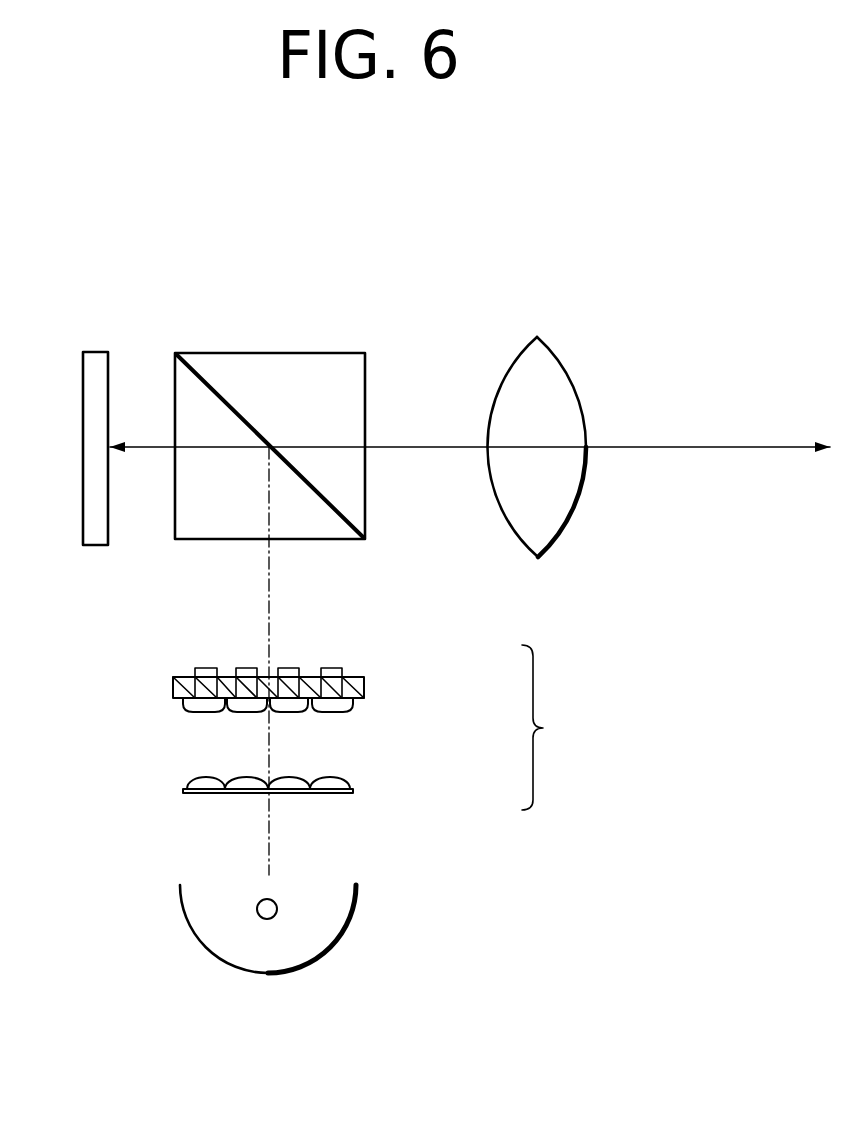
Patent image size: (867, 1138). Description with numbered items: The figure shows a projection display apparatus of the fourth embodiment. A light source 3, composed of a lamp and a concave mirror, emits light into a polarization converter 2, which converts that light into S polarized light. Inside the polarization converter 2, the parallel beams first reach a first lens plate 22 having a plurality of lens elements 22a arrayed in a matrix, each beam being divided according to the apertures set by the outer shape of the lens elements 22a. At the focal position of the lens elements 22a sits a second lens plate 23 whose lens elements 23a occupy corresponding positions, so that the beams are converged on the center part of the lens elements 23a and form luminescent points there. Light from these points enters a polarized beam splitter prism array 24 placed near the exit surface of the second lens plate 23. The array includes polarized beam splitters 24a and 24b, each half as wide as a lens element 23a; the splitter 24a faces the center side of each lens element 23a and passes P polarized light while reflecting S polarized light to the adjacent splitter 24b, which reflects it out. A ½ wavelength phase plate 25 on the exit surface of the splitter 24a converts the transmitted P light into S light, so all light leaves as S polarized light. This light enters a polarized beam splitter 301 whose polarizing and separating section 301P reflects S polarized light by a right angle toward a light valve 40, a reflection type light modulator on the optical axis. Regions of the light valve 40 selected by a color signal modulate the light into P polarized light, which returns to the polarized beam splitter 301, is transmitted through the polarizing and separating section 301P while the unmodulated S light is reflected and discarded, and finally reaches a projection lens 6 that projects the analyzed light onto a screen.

The polarization converter 2 is at (550, 727).
The light source 3 is at (352, 913).
The projection lens 6 is at (557, 362).
The first lens plate 22 is at (346, 825).
The lens element 22a is at (327, 783).
The second lens plate 23 is at (346, 734).
The lens element 23a is at (337, 700).
The polarized beam splitter prism array 24 is at (309, 664).
The polarized beam splitter 24a is at (243, 672).
The polarized beam splitter 24b is at (260, 673).
The ½ wavelength phase plate 25 is at (287, 668).
The light valve 40 is at (97, 351).
The polarized beam splitter 301 is at (277, 352).
The polarizing and separating section 301P is at (332, 512).